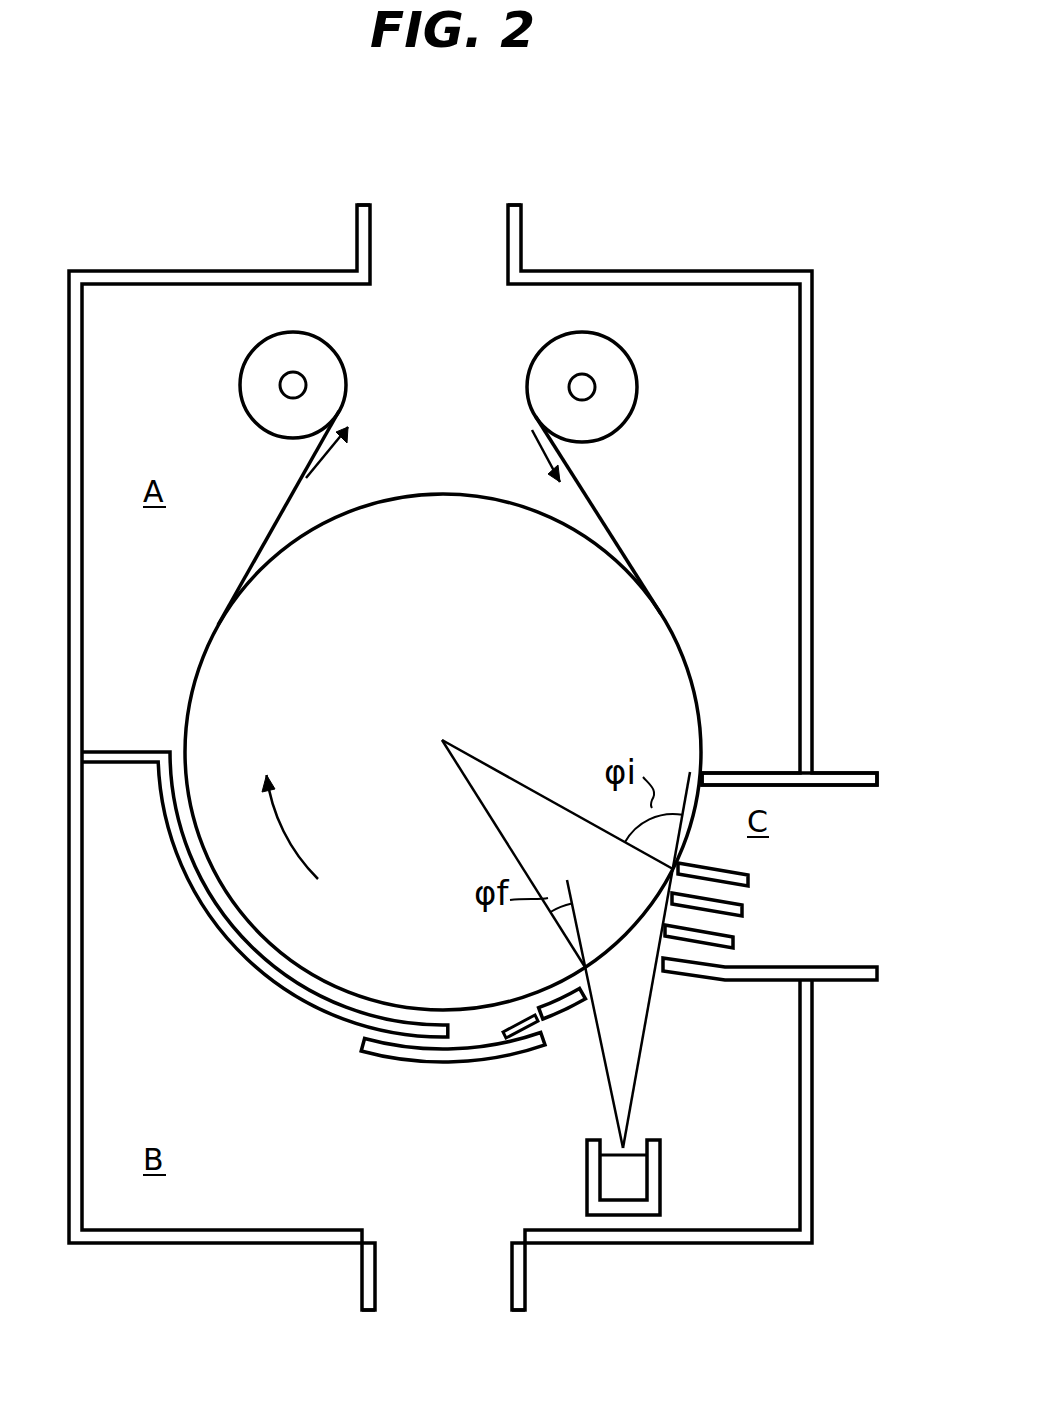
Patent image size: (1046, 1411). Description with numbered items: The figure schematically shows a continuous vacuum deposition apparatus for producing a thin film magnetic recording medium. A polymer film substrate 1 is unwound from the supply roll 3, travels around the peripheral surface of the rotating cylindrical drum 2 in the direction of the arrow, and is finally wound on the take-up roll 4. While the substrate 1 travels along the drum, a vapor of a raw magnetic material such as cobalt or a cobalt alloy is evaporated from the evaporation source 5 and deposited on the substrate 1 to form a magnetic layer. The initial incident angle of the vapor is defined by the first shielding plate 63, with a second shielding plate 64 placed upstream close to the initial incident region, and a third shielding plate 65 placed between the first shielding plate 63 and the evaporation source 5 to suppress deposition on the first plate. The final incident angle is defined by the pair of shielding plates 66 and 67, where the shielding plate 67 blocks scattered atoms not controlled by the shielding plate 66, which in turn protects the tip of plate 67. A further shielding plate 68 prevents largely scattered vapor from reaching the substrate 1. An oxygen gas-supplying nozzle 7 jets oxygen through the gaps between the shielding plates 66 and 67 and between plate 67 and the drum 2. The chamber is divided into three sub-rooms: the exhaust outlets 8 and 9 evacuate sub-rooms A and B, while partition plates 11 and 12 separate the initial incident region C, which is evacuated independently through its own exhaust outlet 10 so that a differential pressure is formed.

The substrate 1 is at (603, 518).
The cylindrical drum 2 is at (433, 512).
The supply roll 3 is at (622, 345).
The take-up roll 4 is at (331, 345).
The evaporation source 5 is at (661, 1170).
The oxygen gas-supplying nozzle 7 is at (535, 1043).
The exhaust outlet 8 is at (457, 220).
The exhaust outlet 9 is at (452, 1265).
The independent exhaust outlet 10 is at (845, 918).
The partition plate 11 is at (763, 772).
The partition plate 12 is at (760, 983).
The first shielding plate 63 is at (745, 907).
The second shielding plate 64 is at (750, 875).
The third shielding plate 65 is at (740, 942).
The shielding plate 66 is at (412, 1063).
The shielding plate 67 is at (562, 1040).
The shielding plate 68 is at (278, 983).